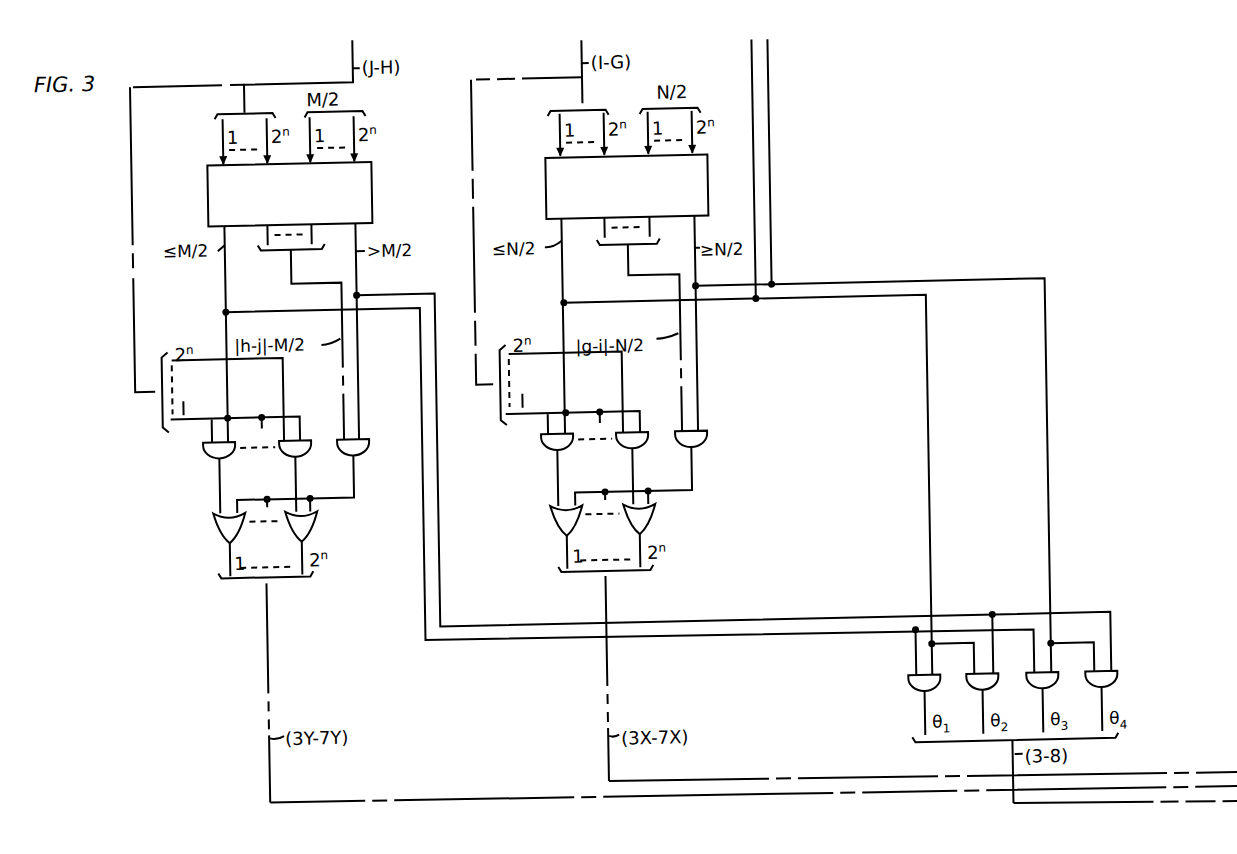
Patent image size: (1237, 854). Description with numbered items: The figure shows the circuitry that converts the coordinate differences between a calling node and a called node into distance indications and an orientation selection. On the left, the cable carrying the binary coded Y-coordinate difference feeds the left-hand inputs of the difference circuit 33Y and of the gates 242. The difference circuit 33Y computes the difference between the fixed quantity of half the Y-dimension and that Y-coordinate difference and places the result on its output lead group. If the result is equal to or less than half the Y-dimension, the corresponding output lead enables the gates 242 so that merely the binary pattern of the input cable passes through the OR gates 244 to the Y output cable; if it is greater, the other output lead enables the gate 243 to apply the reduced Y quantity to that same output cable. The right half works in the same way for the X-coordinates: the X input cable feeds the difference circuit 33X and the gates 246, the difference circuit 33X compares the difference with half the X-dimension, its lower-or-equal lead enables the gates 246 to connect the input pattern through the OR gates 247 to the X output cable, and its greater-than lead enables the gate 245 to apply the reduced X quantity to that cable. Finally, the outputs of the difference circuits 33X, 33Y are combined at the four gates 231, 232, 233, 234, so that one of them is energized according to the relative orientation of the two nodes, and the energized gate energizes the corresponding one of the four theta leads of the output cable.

The difference circuit 33Y is at (212, 188).
The difference circuit 33X is at (550, 187).
The gates 242 is at (283, 476).
The gate 243 is at (360, 450).
The OR gates 244 is at (285, 537).
The gate 245 is at (699, 449).
The gates 246 is at (618, 463).
The OR gates 247 is at (622, 538).
The gate 231 is at (927, 698).
The gate 232 is at (985, 698).
The gate 233 is at (1045, 698).
The gate 234 is at (1104, 698).